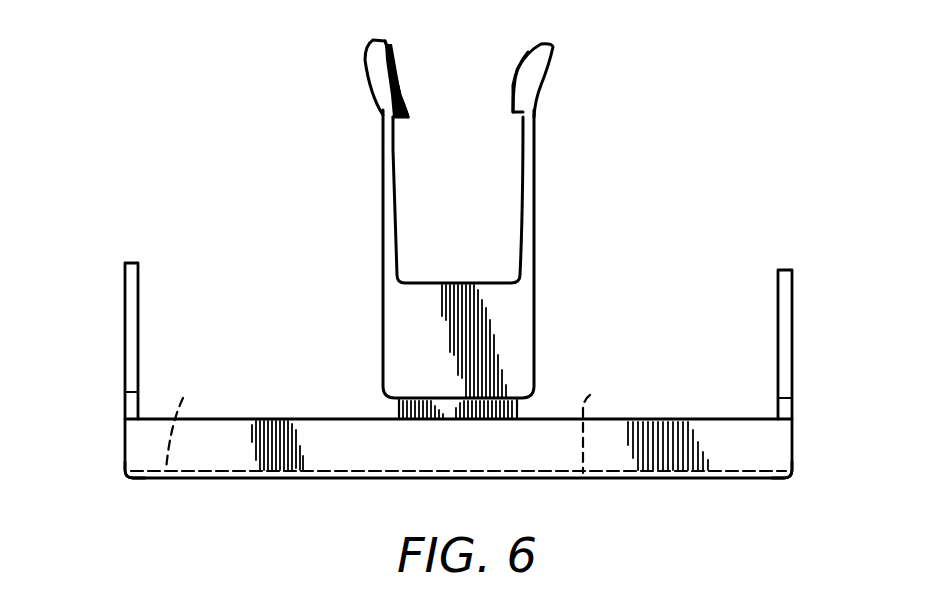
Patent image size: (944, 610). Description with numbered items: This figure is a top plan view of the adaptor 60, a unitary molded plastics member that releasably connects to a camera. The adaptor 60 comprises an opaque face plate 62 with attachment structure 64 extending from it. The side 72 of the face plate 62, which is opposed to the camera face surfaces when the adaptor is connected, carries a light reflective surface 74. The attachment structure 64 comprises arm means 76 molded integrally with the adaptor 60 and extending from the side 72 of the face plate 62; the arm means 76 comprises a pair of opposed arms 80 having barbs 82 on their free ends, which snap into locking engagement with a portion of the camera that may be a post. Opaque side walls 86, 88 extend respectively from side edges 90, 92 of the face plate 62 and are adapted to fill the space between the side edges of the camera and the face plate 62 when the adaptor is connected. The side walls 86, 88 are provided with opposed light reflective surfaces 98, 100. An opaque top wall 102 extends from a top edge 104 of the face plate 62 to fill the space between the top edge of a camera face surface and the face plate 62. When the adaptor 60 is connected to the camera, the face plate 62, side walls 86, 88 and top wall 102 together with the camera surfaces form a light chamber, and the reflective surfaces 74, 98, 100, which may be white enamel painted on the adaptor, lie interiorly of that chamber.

The adaptor 60 is at (131, 78).
The face plate 62 is at (372, 481).
The attachment structure 64 is at (535, 219).
The side of the face plate 72 is at (606, 424).
The light reflective surface 74 is at (190, 428).
The arm means 76 is at (382, 218).
The opposed arms 80 is at (382, 139).
The barbs 82 is at (512, 80).
The side wall 86 is at (124, 289).
The side wall 88 is at (793, 341).
The side edge of the face plate 90 is at (127, 480).
The side edge of the face plate 92 is at (793, 480).
The light reflective surface 98 is at (139, 320).
The light reflective surface 100 is at (777, 314).
The top wall 102 is at (320, 428).
The top edge of the face plate 104 is at (257, 481).